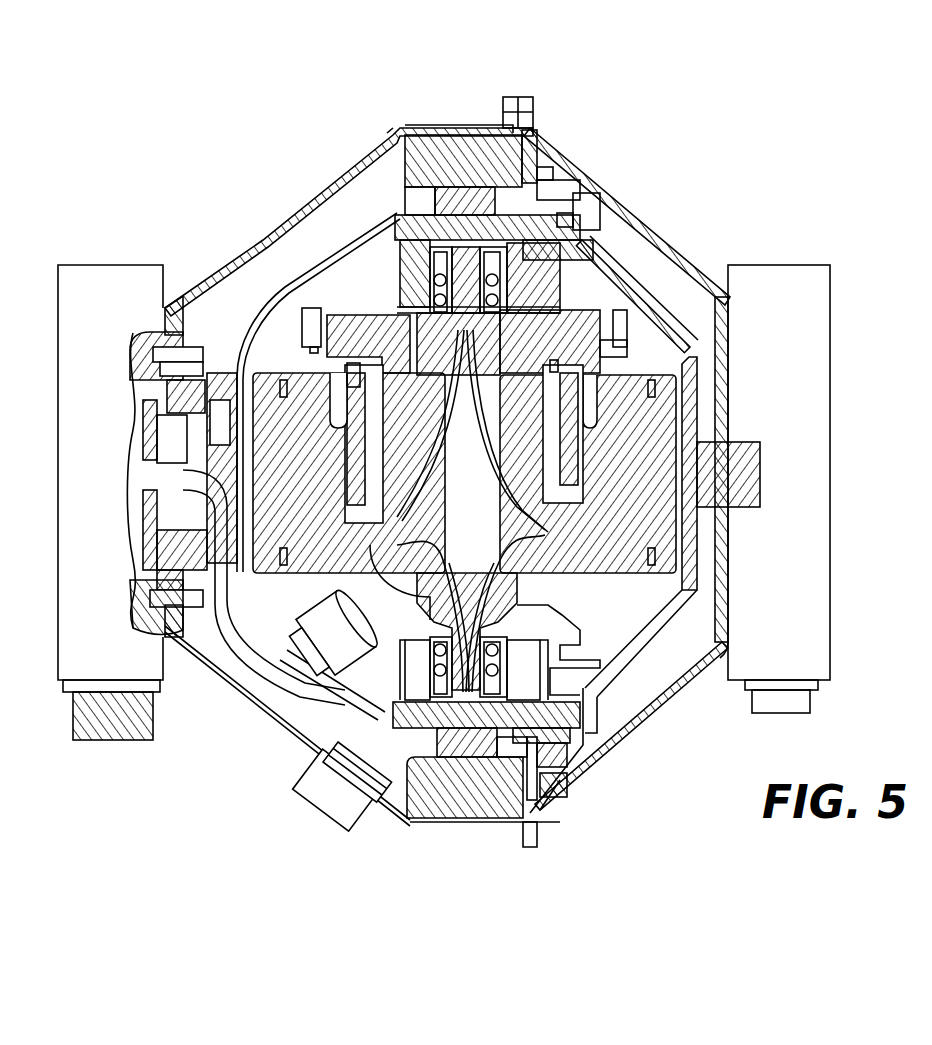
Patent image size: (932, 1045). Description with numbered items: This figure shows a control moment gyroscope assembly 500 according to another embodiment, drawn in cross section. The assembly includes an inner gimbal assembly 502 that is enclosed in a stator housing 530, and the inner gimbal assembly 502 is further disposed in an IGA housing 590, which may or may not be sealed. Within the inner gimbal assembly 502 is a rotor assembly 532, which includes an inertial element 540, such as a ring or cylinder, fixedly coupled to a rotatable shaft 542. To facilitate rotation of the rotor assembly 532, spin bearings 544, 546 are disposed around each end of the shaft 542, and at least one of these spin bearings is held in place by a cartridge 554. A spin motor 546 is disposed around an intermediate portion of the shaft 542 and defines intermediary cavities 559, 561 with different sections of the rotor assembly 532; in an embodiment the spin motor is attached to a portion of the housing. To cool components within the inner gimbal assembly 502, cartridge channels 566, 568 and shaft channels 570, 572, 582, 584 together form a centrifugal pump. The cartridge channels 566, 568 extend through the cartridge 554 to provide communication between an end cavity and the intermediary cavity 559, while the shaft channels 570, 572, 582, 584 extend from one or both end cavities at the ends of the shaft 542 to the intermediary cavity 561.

The control moment gyroscope assembly 500 is at (718, 90).
The inner gimbal assembly 502 is at (620, 287).
The stator housing 530 is at (621, 208).
The rotor assembly 532 is at (657, 364).
The inertial element 540 is at (640, 440).
The shaft 542 is at (465, 500).
The spin bearing 544 is at (432, 360).
The spin bearing 546 is at (435, 300).
The cartridge 554 is at (411, 272).
The intermediary cavity 559 is at (334, 300).
The intermediary cavity 561 is at (377, 490).
The cartridge channel 566 is at (420, 275).
The cartridge channel 568 is at (516, 278).
The shaft channel 570 is at (432, 412).
The shaft channel 572 is at (548, 383).
The shaft channel 582 is at (422, 546).
The shaft channel 584 is at (497, 567).
The IGA housing 590 is at (680, 345).